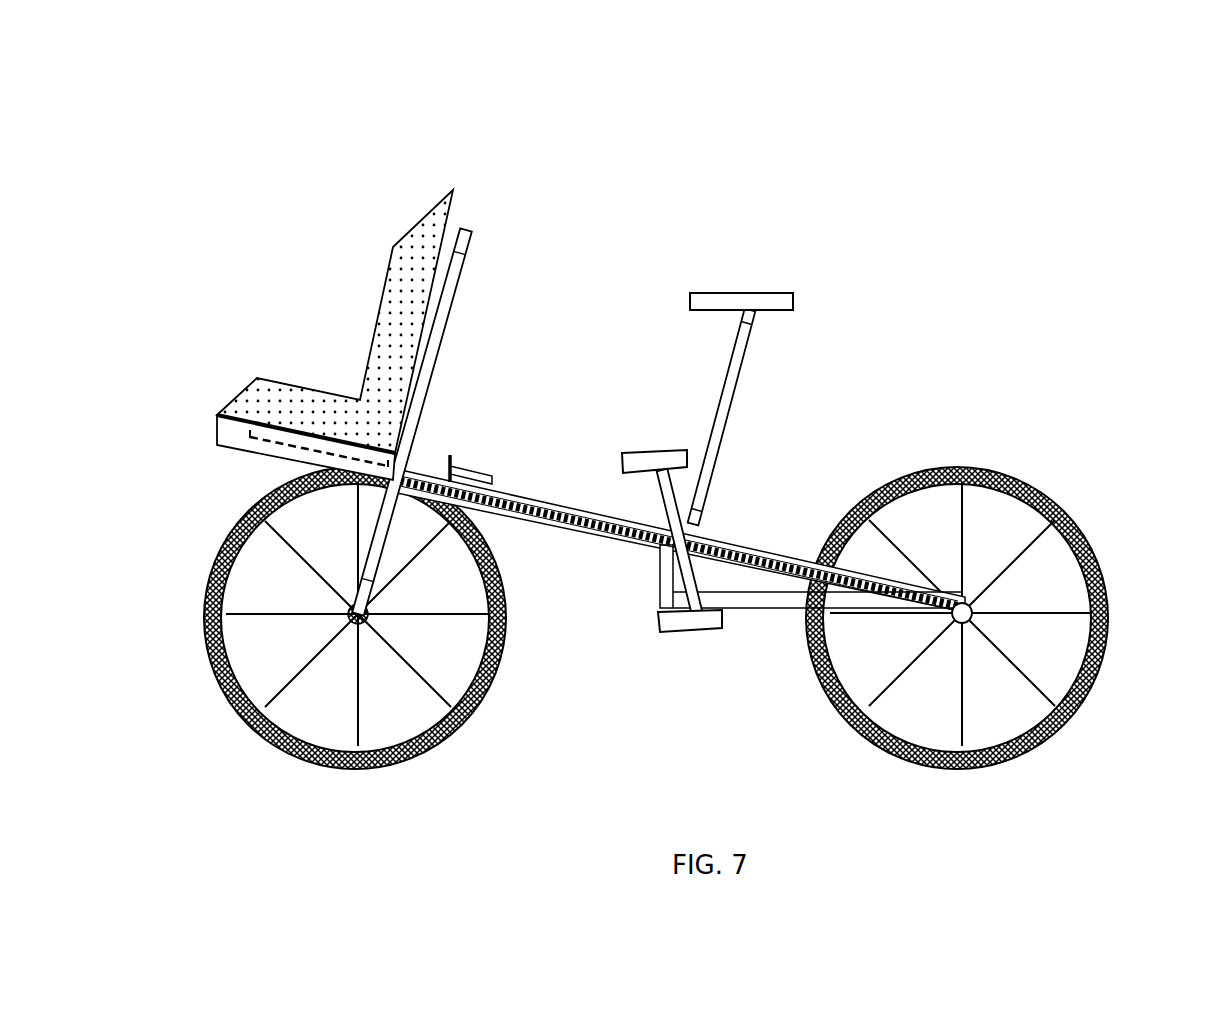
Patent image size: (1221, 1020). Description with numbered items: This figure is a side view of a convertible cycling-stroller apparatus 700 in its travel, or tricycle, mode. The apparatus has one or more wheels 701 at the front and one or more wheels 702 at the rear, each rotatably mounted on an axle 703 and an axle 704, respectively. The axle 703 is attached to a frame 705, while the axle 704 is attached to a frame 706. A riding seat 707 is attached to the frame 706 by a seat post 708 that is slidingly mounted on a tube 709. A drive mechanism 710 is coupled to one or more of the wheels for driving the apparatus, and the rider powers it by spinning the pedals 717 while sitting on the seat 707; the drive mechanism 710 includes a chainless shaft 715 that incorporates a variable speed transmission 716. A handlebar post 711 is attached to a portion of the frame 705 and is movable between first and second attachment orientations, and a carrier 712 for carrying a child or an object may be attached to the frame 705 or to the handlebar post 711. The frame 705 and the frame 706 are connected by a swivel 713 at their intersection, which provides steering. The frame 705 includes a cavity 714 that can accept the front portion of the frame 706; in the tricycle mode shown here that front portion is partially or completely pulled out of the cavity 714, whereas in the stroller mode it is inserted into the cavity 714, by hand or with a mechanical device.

The convertible cycling-stroller apparatus 700 is at (257, 88).
The wheels 701 is at (243, 724).
The wheels 702 is at (1067, 722).
The axle 703 is at (358, 614).
The axle 704 is at (962, 613).
The frame 705 is at (210, 435).
The frame 706 is at (768, 543).
The riding seat 707 is at (797, 293).
The seat post 708 is at (757, 355).
The tube 709 is at (697, 452).
The drive mechanism 710 is at (660, 547).
The handlebar post 711 is at (468, 222).
The carrier 712 is at (393, 247).
The swivel 713 is at (450, 455).
The cavity 714 is at (265, 458).
The chainless shaft 715 is at (750, 562).
The variable speed transmission 716 is at (977, 598).
The pedals 717 is at (668, 632).